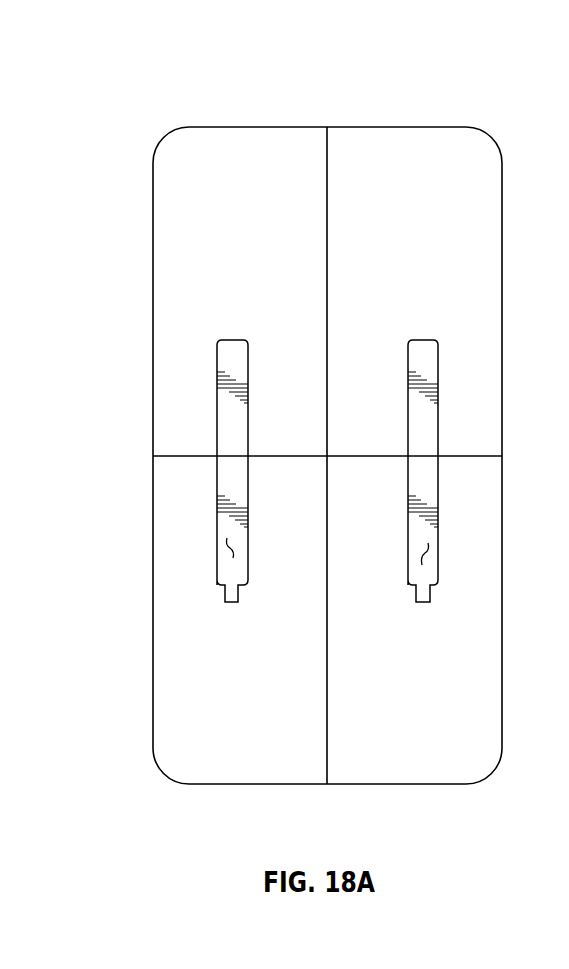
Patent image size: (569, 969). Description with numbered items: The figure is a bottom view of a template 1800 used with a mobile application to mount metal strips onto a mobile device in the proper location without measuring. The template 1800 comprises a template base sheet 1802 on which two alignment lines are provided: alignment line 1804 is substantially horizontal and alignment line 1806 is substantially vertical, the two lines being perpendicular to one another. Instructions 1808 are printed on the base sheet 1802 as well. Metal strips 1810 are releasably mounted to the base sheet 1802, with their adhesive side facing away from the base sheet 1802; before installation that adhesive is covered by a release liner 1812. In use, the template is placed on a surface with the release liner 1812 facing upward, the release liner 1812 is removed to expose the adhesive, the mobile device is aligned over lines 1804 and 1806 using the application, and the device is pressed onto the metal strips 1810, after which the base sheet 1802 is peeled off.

The template 1800 is at (402, 73).
The template base sheet 1802 is at (433, 768).
The alignment line 1804 is at (173, 455).
The alignment line 1806 is at (325, 764).
The instructions 1808 is at (308, 427).
The metal strips 1810 is at (408, 368).
The release liner 1812 is at (230, 548).